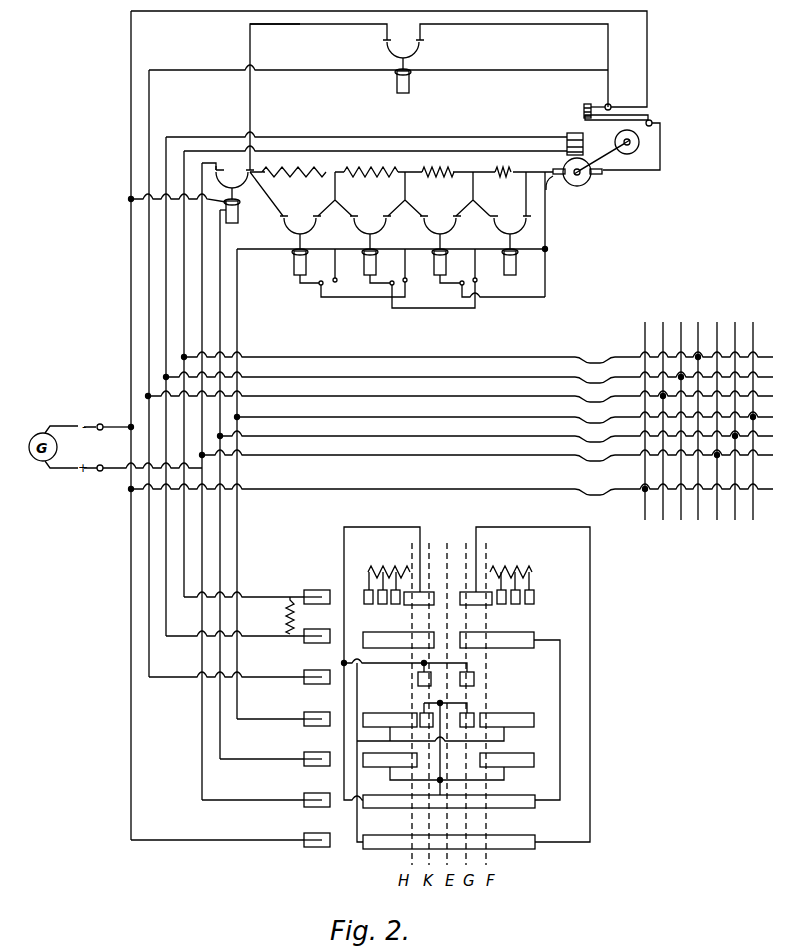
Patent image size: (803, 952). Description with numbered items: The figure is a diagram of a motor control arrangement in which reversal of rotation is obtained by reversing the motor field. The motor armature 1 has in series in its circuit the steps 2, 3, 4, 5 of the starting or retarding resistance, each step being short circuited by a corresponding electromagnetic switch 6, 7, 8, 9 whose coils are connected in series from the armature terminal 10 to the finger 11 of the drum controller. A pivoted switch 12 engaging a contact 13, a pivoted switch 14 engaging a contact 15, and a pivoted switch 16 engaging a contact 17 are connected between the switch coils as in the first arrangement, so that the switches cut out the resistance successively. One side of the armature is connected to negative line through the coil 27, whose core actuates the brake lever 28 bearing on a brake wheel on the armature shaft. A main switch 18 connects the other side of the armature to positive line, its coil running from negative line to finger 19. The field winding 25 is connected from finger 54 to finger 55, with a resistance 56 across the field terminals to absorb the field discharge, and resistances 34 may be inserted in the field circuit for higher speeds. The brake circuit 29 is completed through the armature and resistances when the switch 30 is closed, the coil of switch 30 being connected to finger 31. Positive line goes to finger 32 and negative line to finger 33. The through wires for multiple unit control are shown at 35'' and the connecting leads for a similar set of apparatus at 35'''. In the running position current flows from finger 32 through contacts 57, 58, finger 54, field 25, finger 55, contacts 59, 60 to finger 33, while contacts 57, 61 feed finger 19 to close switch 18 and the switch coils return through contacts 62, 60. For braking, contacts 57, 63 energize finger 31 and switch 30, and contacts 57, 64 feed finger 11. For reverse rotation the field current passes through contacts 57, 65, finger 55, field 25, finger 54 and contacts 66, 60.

The motor armature 1 is at (585, 182).
The resistance step 2 is at (294, 181).
The resistance step 3 is at (371, 181).
The resistance step 4 is at (438, 181).
The resistance step 5 is at (502, 181).
The electromagnetic switch 6 is at (302, 242).
The electromagnetic switch 7 is at (372, 242).
The electromagnetic switch 8 is at (442, 242).
The electromagnetic switch 9 is at (512, 242).
The armature terminal 10 is at (556, 186).
The finger 11 is at (304, 726).
The pivoted switch 12 is at (322, 272).
The contact 13 is at (318, 287).
The pivoted switch 14 is at (392, 272).
The contact 15 is at (390, 288).
The pivoted switch 16 is at (462, 272).
The contact 17 is at (460, 288).
The main switch 18 is at (237, 205).
The finger 19 is at (304, 766).
The field winding 25 is at (566, 138).
The coil 27 is at (583, 110).
The brake lever 28 is at (622, 142).
The brake circuit 29 is at (324, 36).
The switch 30 is at (410, 66).
The finger 31 is at (304, 684).
The finger 32 is at (304, 807).
The finger 33 is at (304, 847).
The resistances 34 is at (449, 573).
The through wires 35'' is at (451, 416).
The connecting leads 35''' is at (716, 420).
The finger 54 is at (304, 644).
The finger 55 is at (304, 590).
The resistance 56 is at (288, 620).
The contact 57 is at (500, 808).
The contact 58 is at (500, 646).
The contact 59 is at (474, 603).
The contact 60 is at (512, 849).
The contact 61 is at (512, 764).
The contact 62 is at (505, 710).
The contact 63 is at (474, 680).
The contact 64 is at (458, 722).
The contact 65 is at (420, 603).
The contact 66 is at (378, 636).